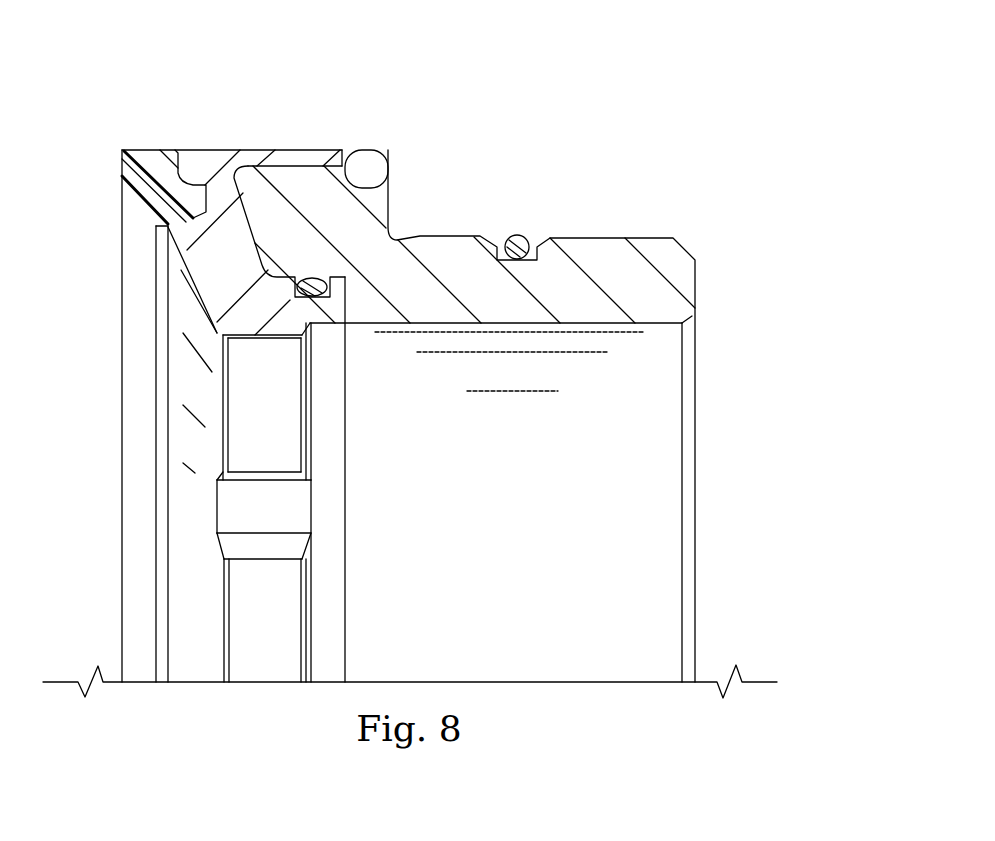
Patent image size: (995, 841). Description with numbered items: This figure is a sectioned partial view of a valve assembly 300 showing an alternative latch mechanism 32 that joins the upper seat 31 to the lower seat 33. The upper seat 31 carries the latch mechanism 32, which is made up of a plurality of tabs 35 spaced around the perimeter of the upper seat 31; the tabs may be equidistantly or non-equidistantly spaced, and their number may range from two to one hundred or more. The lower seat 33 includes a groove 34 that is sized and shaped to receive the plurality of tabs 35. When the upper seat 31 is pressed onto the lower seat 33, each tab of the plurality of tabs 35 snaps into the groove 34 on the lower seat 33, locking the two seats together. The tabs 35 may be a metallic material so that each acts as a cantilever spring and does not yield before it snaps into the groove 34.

The valve assembly 300 is at (516, 140).
The latch mechanism 32 is at (287, 121).
The plurality of tabs 35 is at (313, 148).
The groove 34 is at (389, 164).
The lower seat 33 is at (592, 248).
The upper seat 31 is at (283, 333).